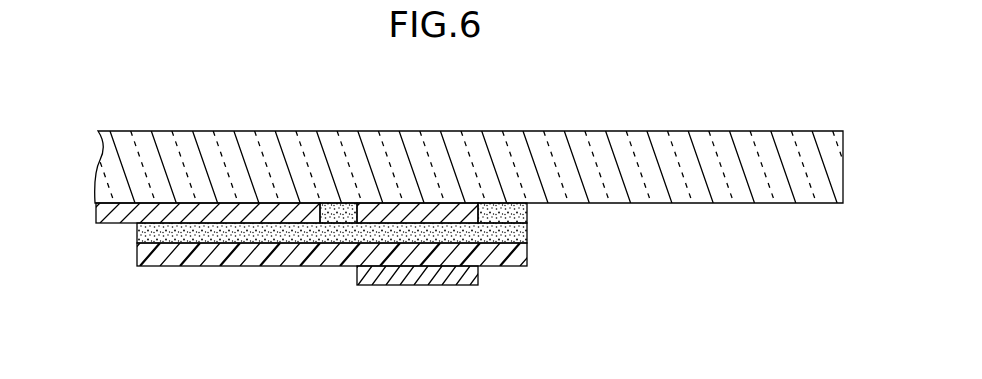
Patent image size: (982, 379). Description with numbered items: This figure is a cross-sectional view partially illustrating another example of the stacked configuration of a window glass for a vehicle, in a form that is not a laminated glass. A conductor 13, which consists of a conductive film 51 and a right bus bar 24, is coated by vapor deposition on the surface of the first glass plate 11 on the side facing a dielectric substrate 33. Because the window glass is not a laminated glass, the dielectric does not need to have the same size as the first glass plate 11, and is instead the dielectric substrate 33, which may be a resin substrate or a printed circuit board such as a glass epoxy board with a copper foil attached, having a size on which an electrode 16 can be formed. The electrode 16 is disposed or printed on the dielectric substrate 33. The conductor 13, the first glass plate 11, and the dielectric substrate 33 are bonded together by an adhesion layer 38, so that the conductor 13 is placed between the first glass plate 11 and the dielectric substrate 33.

The first glass plate 11 is at (126, 158).
The conductor 13 is at (247, 154).
The right bus bar 24 is at (420, 209).
The conductive film 51 is at (116, 212).
The adhesion layer 38 is at (150, 233).
The dielectric substrate 33 is at (150, 252).
The electrode 16 is at (416, 274).